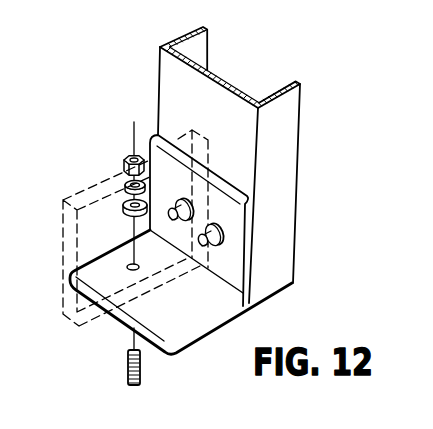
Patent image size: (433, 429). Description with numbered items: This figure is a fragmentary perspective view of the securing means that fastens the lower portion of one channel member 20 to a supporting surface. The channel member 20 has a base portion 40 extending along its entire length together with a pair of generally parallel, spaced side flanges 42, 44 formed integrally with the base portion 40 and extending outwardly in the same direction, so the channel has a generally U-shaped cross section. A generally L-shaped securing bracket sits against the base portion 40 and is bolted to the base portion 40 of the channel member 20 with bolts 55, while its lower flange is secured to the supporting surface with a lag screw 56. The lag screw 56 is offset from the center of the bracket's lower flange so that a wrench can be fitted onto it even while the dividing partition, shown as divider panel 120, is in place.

The channel member 20 is at (237, 158).
The base portion 40 is at (198, 106).
The side flange 42 is at (200, 53).
The side flange 44 is at (288, 150).
The bolts 55 is at (206, 247).
The lag screw 56 is at (124, 361).
The divider panel 120 is at (83, 197).